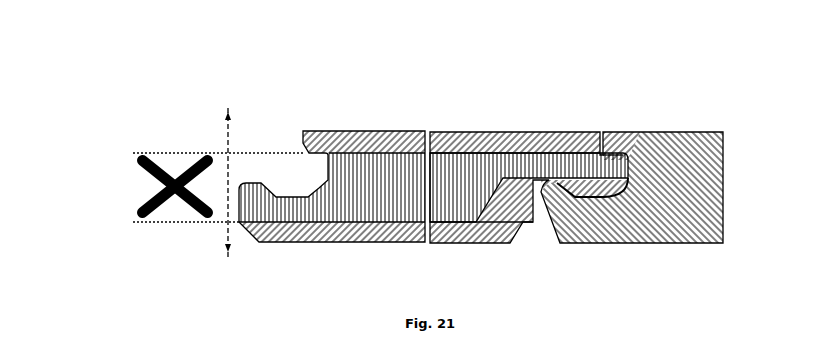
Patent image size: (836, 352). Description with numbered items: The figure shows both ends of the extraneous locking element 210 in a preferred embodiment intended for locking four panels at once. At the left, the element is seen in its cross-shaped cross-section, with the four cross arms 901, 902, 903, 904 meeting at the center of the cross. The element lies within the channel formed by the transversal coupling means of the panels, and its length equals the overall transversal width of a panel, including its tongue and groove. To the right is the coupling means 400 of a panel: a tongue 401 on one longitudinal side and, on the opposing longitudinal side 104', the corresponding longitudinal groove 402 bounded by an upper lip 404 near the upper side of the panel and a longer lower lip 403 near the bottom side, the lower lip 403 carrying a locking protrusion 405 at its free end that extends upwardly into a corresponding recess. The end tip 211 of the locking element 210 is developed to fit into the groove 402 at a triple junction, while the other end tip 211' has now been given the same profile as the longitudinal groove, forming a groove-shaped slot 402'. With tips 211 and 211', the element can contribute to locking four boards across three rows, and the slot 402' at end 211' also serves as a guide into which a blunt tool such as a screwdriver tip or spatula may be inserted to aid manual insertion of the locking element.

The cross arm 904 is at (140, 160).
The cross arm 903 is at (140, 212).
The cross arm 901 is at (204, 158).
The cross arm 902 is at (204, 220).
The extraneous locking element 210 is at (147, 155).
The end tip of the extraneous locking element 211' is at (332, 134).
The groove-shaped slot 402' is at (335, 227).
The coupling means 400 is at (492, 116).
The tongue 401 is at (603, 185).
The upper lip 404 is at (606, 156).
The end portion of the extraneous locking element 211 is at (670, 100).
The opposing longitudinal side 104' is at (672, 187).
The locking protrusion 405 is at (553, 215).
The lower lip 403 is at (600, 205).
The longitudinal groove 402 is at (671, 260).